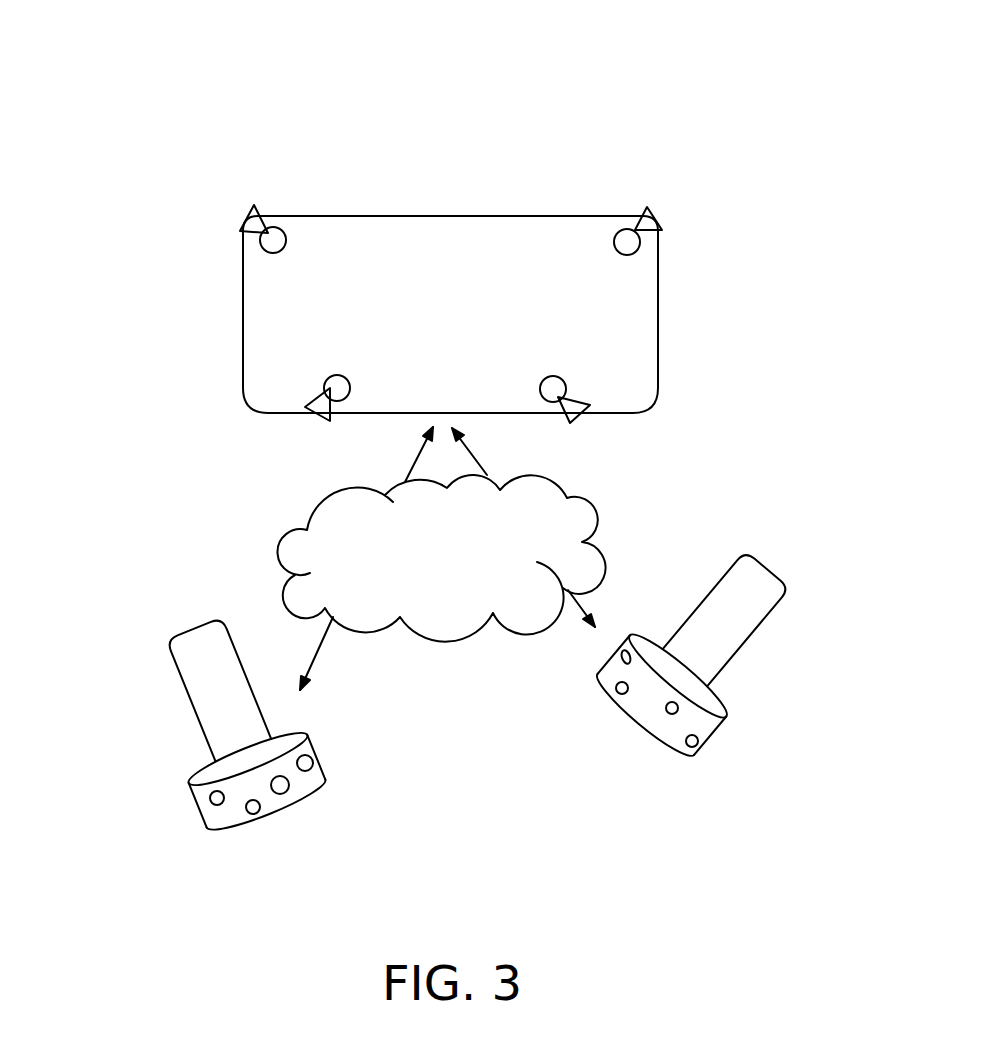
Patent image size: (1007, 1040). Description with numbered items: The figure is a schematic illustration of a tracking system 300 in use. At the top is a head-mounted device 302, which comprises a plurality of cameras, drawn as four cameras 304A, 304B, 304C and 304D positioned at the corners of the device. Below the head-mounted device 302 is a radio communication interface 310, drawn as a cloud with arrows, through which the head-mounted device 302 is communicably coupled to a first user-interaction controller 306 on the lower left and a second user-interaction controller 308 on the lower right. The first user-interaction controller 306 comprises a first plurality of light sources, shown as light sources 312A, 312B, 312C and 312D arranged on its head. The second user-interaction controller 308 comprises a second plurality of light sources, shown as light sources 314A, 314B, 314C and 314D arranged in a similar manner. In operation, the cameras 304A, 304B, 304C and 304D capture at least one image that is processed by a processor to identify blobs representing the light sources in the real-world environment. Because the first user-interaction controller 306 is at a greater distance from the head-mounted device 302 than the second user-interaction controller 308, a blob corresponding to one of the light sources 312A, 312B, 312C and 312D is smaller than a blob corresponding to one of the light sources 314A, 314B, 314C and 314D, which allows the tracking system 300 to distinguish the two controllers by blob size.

The tracking system 300 is at (798, 69).
The head-mounted device 302 is at (450, 272).
The camera 304A is at (620, 195).
The camera 304B is at (291, 193).
The camera 304C is at (227, 368).
The camera 304D is at (662, 370).
The first user-interaction controller 306 is at (208, 698).
The second user-interaction controller 308 is at (717, 624).
The radio communication interface 310 is at (441, 562).
The light source 312A is at (138, 818).
The light source 312B is at (221, 854).
The light source 312C is at (315, 827).
The light source 312D is at (368, 792).
The light source 314A is at (557, 668).
The light source 314B is at (581, 731).
The light source 314C is at (639, 755).
The light source 314D is at (716, 786).